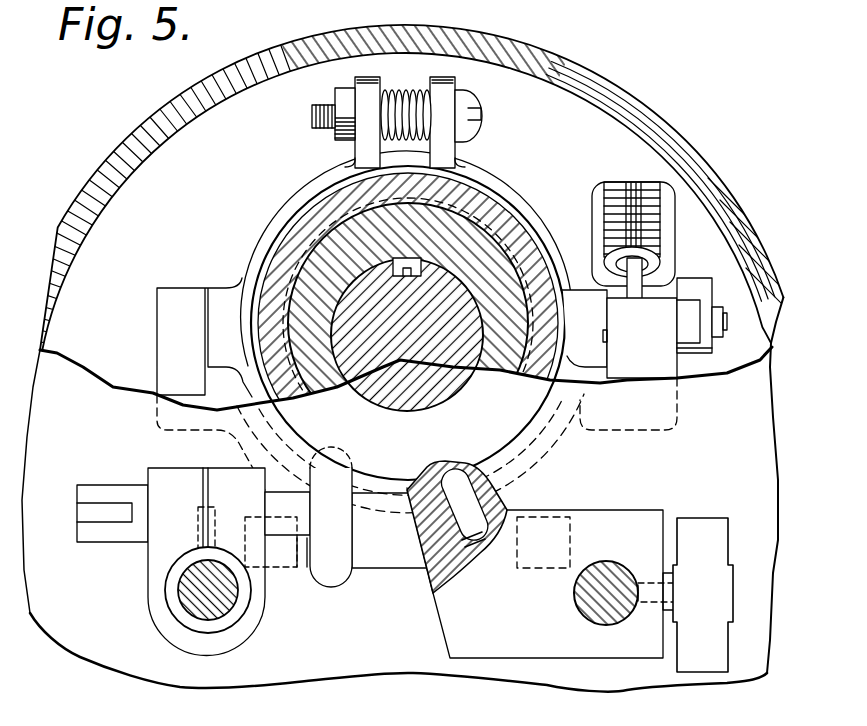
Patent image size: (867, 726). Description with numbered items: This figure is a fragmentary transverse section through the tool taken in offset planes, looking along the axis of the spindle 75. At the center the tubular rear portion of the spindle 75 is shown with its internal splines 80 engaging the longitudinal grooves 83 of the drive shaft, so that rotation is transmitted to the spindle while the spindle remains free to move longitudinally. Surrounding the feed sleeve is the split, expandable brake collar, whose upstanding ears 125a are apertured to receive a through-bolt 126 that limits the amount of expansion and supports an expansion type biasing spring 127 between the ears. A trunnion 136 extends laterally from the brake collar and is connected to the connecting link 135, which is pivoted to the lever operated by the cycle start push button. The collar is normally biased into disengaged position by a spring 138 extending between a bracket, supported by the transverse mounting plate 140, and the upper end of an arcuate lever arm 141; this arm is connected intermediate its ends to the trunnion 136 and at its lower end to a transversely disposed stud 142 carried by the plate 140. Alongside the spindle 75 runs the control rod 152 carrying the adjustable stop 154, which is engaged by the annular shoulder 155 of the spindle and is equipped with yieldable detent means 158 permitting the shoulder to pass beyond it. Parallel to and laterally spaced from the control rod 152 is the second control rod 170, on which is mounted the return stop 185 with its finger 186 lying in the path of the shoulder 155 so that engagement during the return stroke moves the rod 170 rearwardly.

The spindle 75 is at (442, 398).
The internal splines 80 is at (409, 276).
The longitudinal grooves 83 is at (415, 276).
The upstanding ears 125a is at (360, 90).
The through-bolt 126 is at (311, 118).
The expansion type biasing spring 127 is at (403, 92).
The connecting link 135 is at (702, 336).
The trunnion 136 is at (719, 322).
The spring 138 is at (612, 200).
The transverse mounting plate 140 is at (632, 147).
The arcuate lever arm 141 is at (668, 366).
The transversely disposed stud 142 is at (573, 540).
The control rod 152 is at (582, 603).
The stop 154 is at (450, 620).
The annular shoulder 155 is at (521, 437).
The yieldable detent means 158 is at (423, 530).
The second control rod 170 is at (240, 606).
The return stop 185 is at (148, 580).
The finger 186 is at (340, 572).